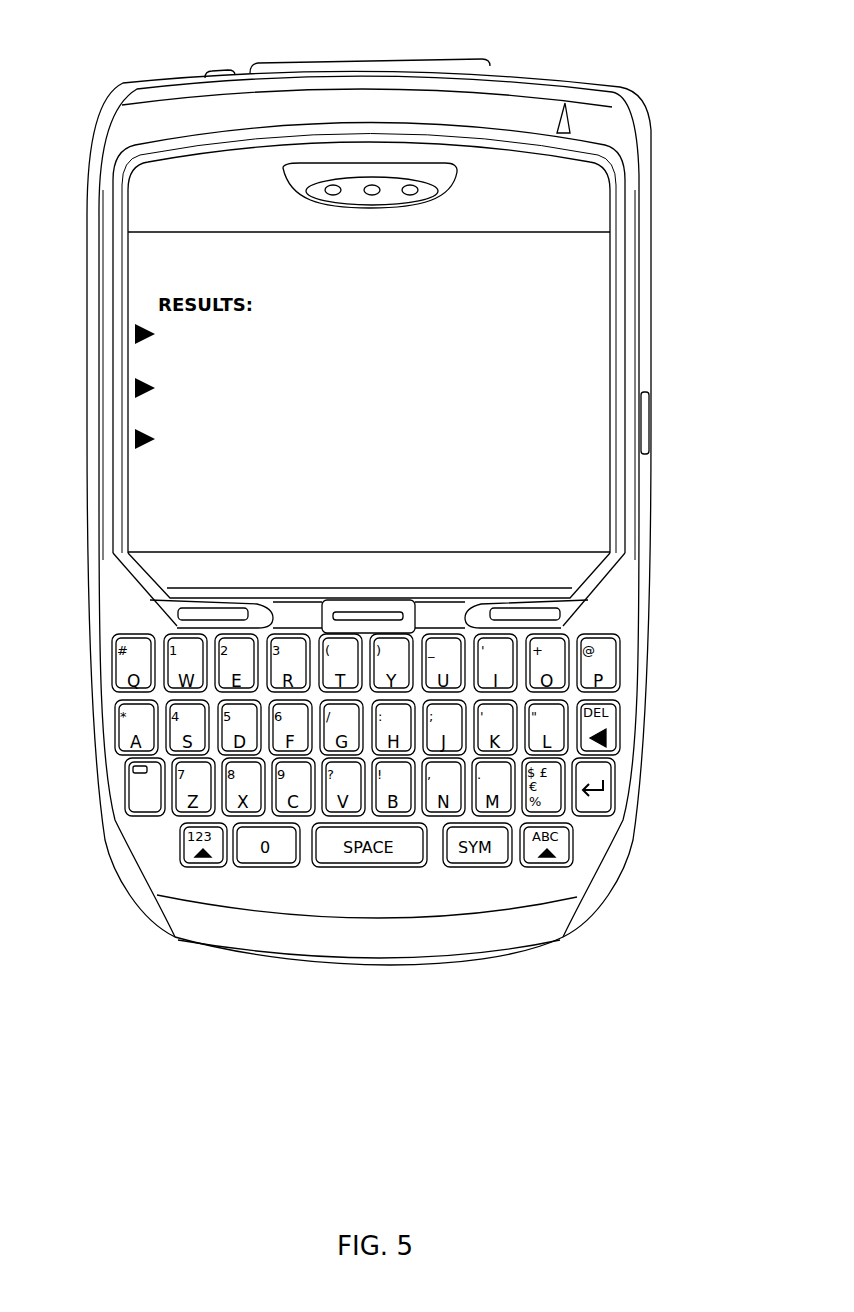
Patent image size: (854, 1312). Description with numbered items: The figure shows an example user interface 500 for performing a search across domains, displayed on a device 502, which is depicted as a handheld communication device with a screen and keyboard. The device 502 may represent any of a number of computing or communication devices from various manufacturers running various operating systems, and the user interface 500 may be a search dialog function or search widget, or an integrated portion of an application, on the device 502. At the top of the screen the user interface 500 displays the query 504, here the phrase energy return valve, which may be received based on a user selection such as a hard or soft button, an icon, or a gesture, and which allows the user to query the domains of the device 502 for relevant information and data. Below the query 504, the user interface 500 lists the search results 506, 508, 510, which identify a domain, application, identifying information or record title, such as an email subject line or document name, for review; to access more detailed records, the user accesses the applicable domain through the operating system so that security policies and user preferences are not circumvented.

The user interface 500 is at (508, 245).
The device 502 is at (203, 24).
The query 504 is at (183, 272).
The search result 506 is at (522, 330).
The search result 508 is at (524, 382).
The search result 510 is at (545, 438).